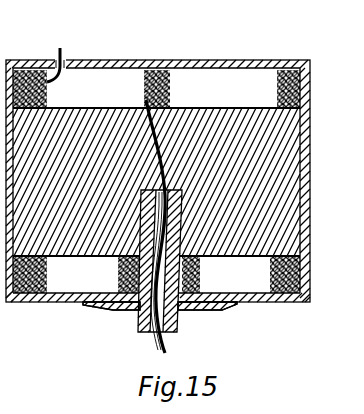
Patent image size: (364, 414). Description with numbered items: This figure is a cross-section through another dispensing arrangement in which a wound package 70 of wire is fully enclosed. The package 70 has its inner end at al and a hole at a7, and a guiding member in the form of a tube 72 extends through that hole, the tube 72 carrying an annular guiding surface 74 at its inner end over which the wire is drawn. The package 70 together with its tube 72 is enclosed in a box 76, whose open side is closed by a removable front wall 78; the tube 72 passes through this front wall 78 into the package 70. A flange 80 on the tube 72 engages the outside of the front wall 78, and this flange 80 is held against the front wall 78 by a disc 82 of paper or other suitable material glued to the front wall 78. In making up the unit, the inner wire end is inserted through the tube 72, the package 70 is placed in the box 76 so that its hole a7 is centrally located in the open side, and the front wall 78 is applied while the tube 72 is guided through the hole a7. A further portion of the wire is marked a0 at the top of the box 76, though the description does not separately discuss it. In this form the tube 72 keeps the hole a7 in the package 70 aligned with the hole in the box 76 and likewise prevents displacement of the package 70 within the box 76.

The package 70 is at (202, 83).
The box 76 is at (123, 62).
The annular guiding surface 74 is at (138, 197).
The removable front wall 78 is at (35, 302).
The tube 72 is at (98, 310).
The flange 80 is at (123, 313).
The disc 82 is at (230, 307).
The hole a7 is at (200, 314).
The wire end a0 is at (65, 52).
The inner end al is at (158, 343).